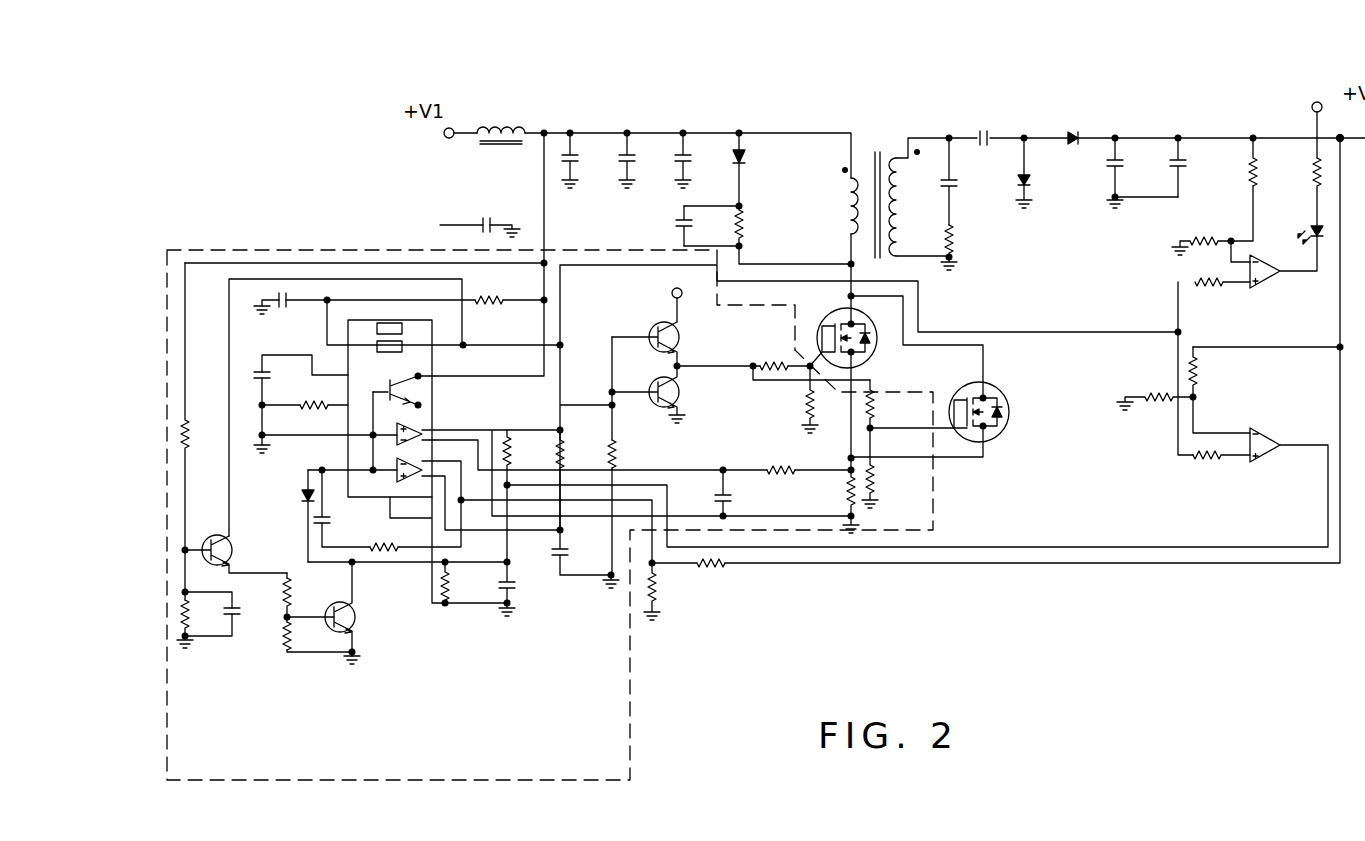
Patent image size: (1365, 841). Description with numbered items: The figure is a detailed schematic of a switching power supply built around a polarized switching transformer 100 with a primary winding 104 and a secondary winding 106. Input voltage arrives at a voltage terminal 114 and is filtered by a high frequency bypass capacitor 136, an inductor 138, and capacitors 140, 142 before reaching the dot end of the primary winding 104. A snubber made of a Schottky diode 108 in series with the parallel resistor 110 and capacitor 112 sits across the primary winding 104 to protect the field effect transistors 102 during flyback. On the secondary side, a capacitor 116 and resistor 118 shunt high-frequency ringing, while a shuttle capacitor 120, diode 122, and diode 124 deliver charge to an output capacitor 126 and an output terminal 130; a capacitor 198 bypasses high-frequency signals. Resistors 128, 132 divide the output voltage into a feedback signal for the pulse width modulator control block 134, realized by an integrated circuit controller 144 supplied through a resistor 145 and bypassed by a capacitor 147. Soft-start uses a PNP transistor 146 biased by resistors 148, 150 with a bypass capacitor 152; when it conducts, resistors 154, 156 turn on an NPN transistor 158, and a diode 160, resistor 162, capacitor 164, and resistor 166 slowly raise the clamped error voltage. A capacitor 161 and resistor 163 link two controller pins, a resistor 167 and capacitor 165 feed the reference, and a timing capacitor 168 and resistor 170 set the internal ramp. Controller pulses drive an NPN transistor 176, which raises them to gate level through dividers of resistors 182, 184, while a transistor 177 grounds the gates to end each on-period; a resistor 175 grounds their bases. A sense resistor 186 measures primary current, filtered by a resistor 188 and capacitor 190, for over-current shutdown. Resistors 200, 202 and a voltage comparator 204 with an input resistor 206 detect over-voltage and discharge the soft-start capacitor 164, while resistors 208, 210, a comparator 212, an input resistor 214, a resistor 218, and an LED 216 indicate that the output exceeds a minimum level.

The polarized switching transformer 100 is at (881, 178).
The field effect transistors 102 is at (871, 359).
The primary winding 104 is at (852, 210).
The secondary winding 106 is at (900, 208).
The Schottky diode 108 is at (746, 158).
The resistor 110 is at (743, 220).
The capacitor 112 is at (676, 226).
The voltage terminal 114 is at (452, 130).
The capacitor 116 is at (957, 184).
The resistor 118 is at (958, 238).
The shuttle capacitor 120 is at (977, 132).
The diode 122 is at (1070, 136).
The diode 124 is at (1034, 189).
The output capacitor 126 is at (1182, 154).
The resistor 128 is at (730, 566).
The output terminal 130 is at (1343, 126).
The resistor 132 is at (658, 586).
The pulse width modulator control block 134 is at (532, 726).
The high frequency bypass capacitor 136 is at (486, 222).
The inductor 138 is at (493, 128).
The capacitor 140 is at (634, 150).
The capacitor 142 is at (694, 150).
The integrated circuit controller 144 is at (400, 322).
The resistor 145 is at (485, 302).
The PNP transistor 146 is at (232, 542).
The capacitor 147 is at (285, 306).
The resistor 148 is at (186, 443).
The resistor 150 is at (190, 639).
The capacitor 152 is at (244, 624).
The resistor 154 is at (300, 580).
The resistor 156 is at (287, 647).
The NPN transistor 158 is at (352, 622).
The diode 160 is at (306, 493).
The capacitor 161 is at (330, 521).
The resistor 162 is at (449, 583).
The resistor 163 is at (380, 551).
The capacitor 164 is at (514, 587).
The capacitor 165 is at (565, 561).
The resistor 166 is at (506, 440).
The resistor 167 is at (562, 444).
The capacitor 168 is at (260, 357).
The resistor 170 is at (319, 400).
The resistor 175 is at (616, 444).
The NPN transistor 176 is at (678, 331).
The transistor 177 is at (658, 406).
The resistor 182 is at (772, 362).
The resistor 184 is at (802, 402).
The resistor 186 is at (842, 492).
The resistor 188 is at (794, 460).
The capacitor 190 is at (716, 494).
The capacitor 198 is at (1120, 154).
The resistor 200 is at (1204, 368).
The resistor 202 is at (1162, 394).
The voltage comparator 204 is at (1275, 420).
The input resistor 206 is at (1206, 458).
The resistor 208 is at (1250, 174).
The resistor 210 is at (1201, 240).
The comparator 212 is at (1266, 276).
The input resistor 214 is at (1208, 288).
The LED 216 is at (1308, 226).
The resistor 218 is at (1314, 176).